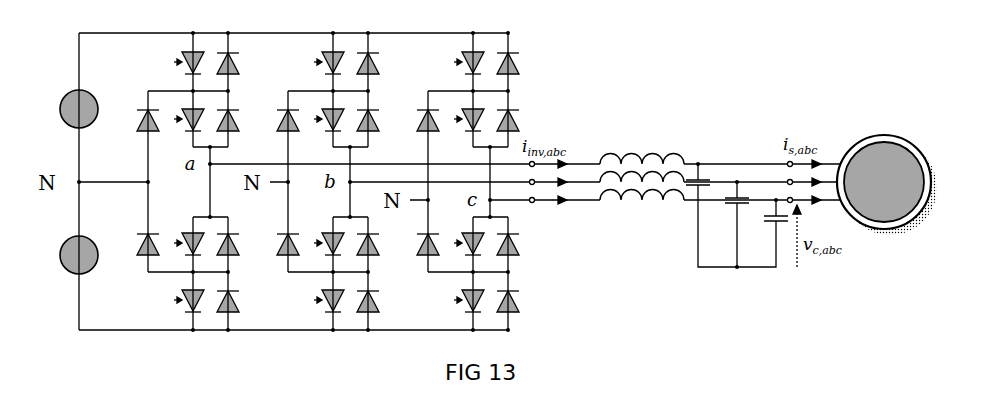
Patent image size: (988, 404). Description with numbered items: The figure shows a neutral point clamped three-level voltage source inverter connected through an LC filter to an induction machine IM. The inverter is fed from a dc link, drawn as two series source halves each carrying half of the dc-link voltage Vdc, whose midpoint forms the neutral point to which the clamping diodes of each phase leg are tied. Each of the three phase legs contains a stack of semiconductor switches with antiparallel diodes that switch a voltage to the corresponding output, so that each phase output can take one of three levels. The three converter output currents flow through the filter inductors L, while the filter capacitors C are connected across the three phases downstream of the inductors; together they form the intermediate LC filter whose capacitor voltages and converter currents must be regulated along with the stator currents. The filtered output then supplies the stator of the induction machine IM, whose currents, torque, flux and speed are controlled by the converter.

The DC link voltage source halves Vdc is at (53, 105).
The filter inductor L is at (642, 163).
The filter capacitor C is at (724, 215).
The induction motor IM is at (887, 185).